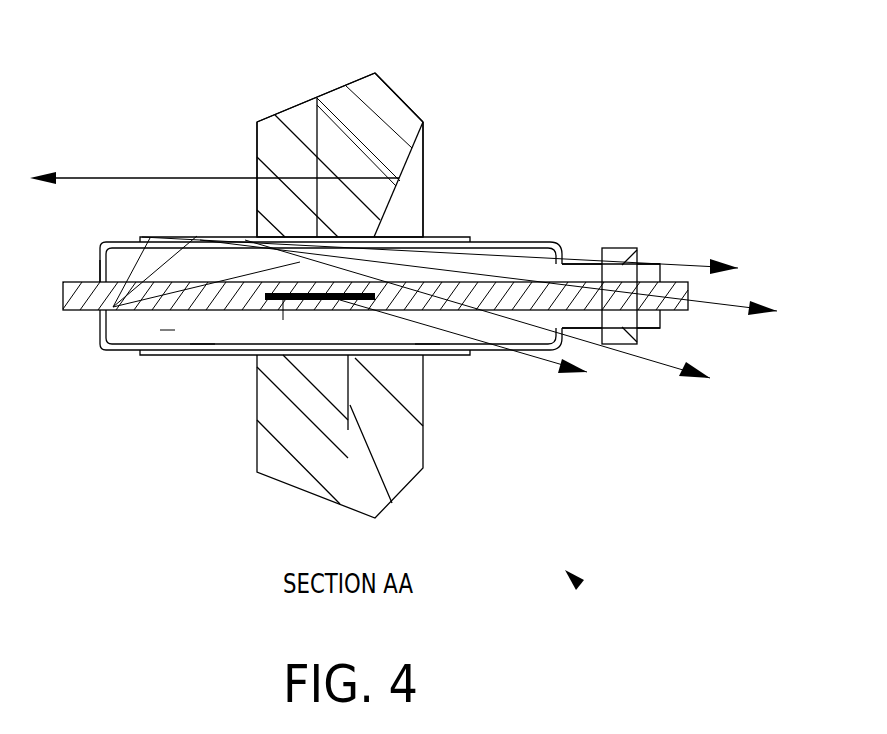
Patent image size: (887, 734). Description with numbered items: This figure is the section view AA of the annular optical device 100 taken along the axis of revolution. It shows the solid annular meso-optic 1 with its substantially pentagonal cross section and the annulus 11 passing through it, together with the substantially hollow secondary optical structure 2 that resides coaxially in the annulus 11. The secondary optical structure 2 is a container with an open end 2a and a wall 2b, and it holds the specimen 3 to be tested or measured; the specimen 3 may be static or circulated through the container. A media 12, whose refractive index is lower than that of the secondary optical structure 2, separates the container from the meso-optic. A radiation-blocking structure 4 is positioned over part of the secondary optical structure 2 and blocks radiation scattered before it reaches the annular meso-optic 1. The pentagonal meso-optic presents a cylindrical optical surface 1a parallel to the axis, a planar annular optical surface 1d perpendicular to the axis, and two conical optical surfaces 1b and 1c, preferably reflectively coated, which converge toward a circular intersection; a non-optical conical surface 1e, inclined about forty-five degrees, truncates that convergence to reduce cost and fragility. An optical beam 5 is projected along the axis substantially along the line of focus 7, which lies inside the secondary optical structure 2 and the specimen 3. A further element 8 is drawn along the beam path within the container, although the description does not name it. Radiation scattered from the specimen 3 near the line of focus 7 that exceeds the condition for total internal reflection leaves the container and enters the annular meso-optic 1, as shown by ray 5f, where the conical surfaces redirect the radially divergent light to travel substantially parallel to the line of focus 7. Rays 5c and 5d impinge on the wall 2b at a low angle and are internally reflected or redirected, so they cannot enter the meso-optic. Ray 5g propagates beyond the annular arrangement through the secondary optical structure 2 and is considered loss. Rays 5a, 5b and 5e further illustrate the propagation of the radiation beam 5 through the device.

The annular meso-optic 1 is at (290, 143).
The cylindrical optical surface 1a is at (377, 215).
The conical optical surface 1b is at (345, 100).
The conical optical surface 1c is at (412, 157).
The planar annular optical surface 1d is at (257, 150).
The non-optical conical surface 1e is at (408, 100).
The secondary optical structure 2 is at (632, 248).
The open end 2a is at (558, 242).
The wall 2b is at (500, 240).
The specimen 3 is at (170, 330).
The radiation-blocking structure 4 is at (222, 352).
The optical beam 5 is at (62, 297).
The ray 5a is at (100, 270).
The ray 5b is at (165, 272).
The ray 5c is at (197, 272).
The ray 5d is at (225, 288).
The ray 5e is at (200, 328).
The ray 5f is at (312, 207).
The ray 5g is at (430, 352).
The line of focus 7 is at (283, 300).
The reflective coating 8 is at (312, 300).
The annulus 11 is at (348, 430).
The media 12 is at (368, 352).
The annular optical device 100 is at (578, 583).